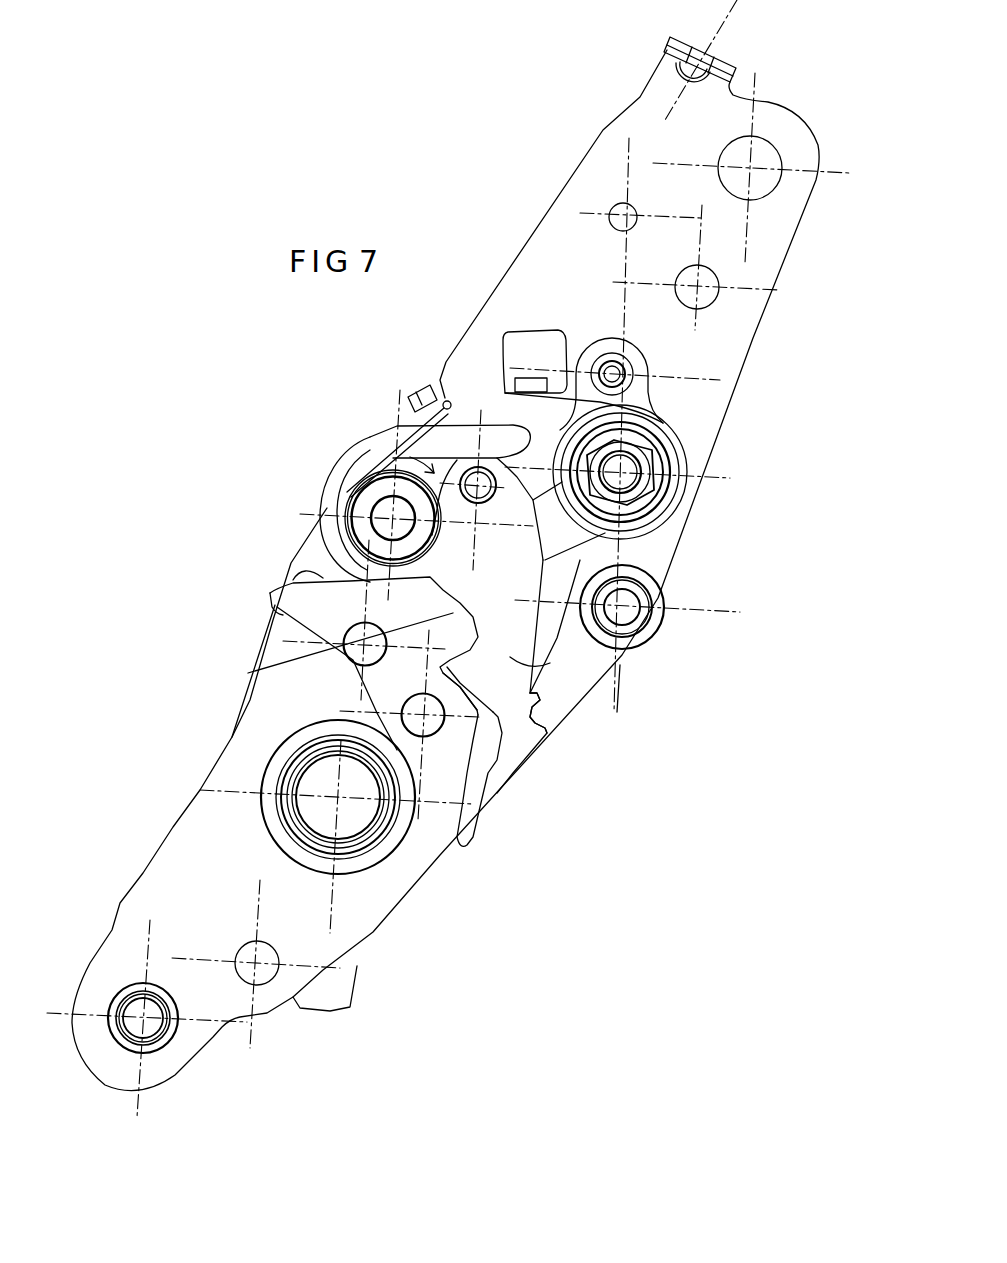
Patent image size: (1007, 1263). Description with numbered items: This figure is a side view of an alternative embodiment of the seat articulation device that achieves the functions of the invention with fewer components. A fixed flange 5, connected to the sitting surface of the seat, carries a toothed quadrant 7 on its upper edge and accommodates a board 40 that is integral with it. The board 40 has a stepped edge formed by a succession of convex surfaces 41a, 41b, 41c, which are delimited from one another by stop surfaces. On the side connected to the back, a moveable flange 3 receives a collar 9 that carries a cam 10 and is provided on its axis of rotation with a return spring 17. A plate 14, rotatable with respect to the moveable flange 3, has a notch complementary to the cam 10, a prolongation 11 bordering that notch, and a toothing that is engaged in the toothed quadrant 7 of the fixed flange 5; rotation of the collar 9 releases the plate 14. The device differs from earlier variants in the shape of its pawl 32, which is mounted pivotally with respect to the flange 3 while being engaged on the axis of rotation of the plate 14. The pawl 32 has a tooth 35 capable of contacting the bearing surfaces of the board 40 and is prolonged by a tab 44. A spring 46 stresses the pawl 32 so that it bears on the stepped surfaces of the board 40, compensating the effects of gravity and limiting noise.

The moveable flange 3 is at (762, 257).
The fixed flange 5 is at (184, 847).
The toothed quadrant 7 is at (540, 717).
The collar 9 is at (640, 400).
The cam 10 is at (568, 547).
The prolongation 11 is at (503, 428).
The plate 14 is at (628, 657).
The return spring 17 is at (545, 360).
The pawl 32 is at (618, 695).
The tooth 35 is at (540, 750).
The board 40 is at (272, 607).
The convex surface 41a is at (498, 805).
The convex surface 41b is at (262, 668).
The convex surface 41c is at (308, 570).
The tab 44 is at (470, 838).
The spring 46 is at (418, 395).